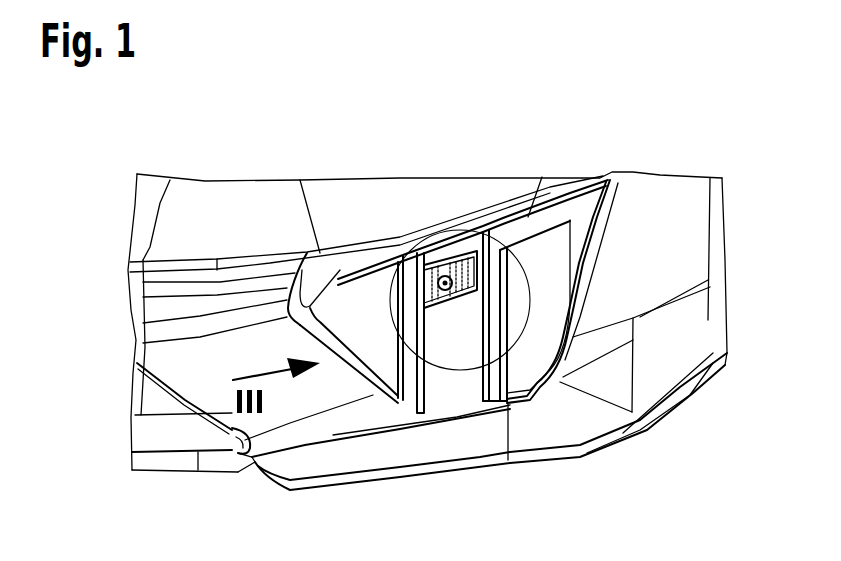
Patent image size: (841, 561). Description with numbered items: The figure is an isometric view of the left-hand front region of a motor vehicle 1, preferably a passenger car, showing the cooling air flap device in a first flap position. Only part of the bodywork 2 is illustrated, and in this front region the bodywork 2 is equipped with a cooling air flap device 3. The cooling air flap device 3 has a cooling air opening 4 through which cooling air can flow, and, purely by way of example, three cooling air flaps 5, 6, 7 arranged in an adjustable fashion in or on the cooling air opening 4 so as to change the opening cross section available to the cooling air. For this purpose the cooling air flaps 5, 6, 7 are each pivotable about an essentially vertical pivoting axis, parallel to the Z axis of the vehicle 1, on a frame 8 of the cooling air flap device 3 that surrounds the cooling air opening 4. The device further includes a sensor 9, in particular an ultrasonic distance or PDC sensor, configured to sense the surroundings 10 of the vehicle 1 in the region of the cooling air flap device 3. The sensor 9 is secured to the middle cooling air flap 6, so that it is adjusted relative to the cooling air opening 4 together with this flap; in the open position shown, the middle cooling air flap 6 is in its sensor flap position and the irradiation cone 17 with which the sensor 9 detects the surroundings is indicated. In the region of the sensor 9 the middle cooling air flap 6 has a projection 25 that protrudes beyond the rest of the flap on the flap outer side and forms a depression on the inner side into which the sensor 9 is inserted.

The motor vehicle 1 is at (142, 138).
The bodywork 2 is at (207, 167).
The cooling air flap device 3 is at (536, 437).
The cooling air opening 4 is at (320, 273).
The cooling air flap 5 is at (370, 293).
The cooling air flap 6 is at (450, 390).
The cooling air flap 7 is at (545, 250).
The frame 8 is at (298, 265).
The sensor 9 is at (438, 275).
The surroundings 10 is at (722, 446).
The irradiation cone 17 is at (524, 240).
The projection 25 is at (476, 213).